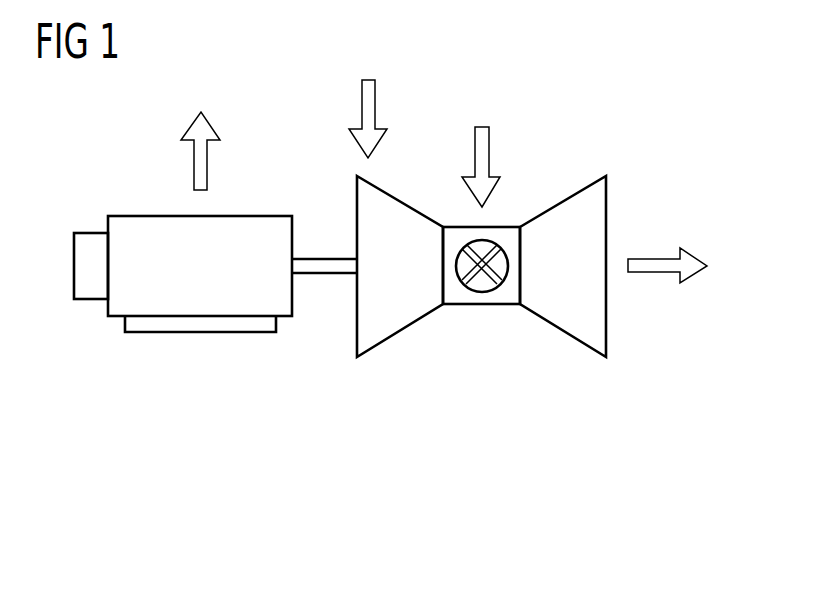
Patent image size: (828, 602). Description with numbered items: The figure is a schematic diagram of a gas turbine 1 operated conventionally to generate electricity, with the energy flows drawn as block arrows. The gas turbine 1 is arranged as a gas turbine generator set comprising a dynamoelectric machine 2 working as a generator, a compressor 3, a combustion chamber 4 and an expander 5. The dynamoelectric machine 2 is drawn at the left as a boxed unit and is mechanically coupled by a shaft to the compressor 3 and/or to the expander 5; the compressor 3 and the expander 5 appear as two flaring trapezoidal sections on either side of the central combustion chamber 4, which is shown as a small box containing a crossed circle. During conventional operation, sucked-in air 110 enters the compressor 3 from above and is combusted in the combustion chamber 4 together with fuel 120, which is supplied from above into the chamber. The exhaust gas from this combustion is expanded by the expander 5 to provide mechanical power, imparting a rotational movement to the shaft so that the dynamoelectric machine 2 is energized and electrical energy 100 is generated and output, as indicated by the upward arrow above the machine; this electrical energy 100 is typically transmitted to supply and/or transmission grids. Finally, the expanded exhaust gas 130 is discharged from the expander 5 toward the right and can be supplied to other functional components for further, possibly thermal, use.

The gas turbine 1 is at (660, 133).
The dynamoelectric machine 2 is at (263, 216).
The compressor 3 is at (398, 333).
The combustion chamber 4 is at (482, 305).
The expander 5 is at (565, 336).
The electrical energy 100 is at (194, 163).
The sucked-in air 110 is at (362, 103).
The fuel 120 is at (489, 150).
The expanded exhaust gas 130 is at (652, 273).